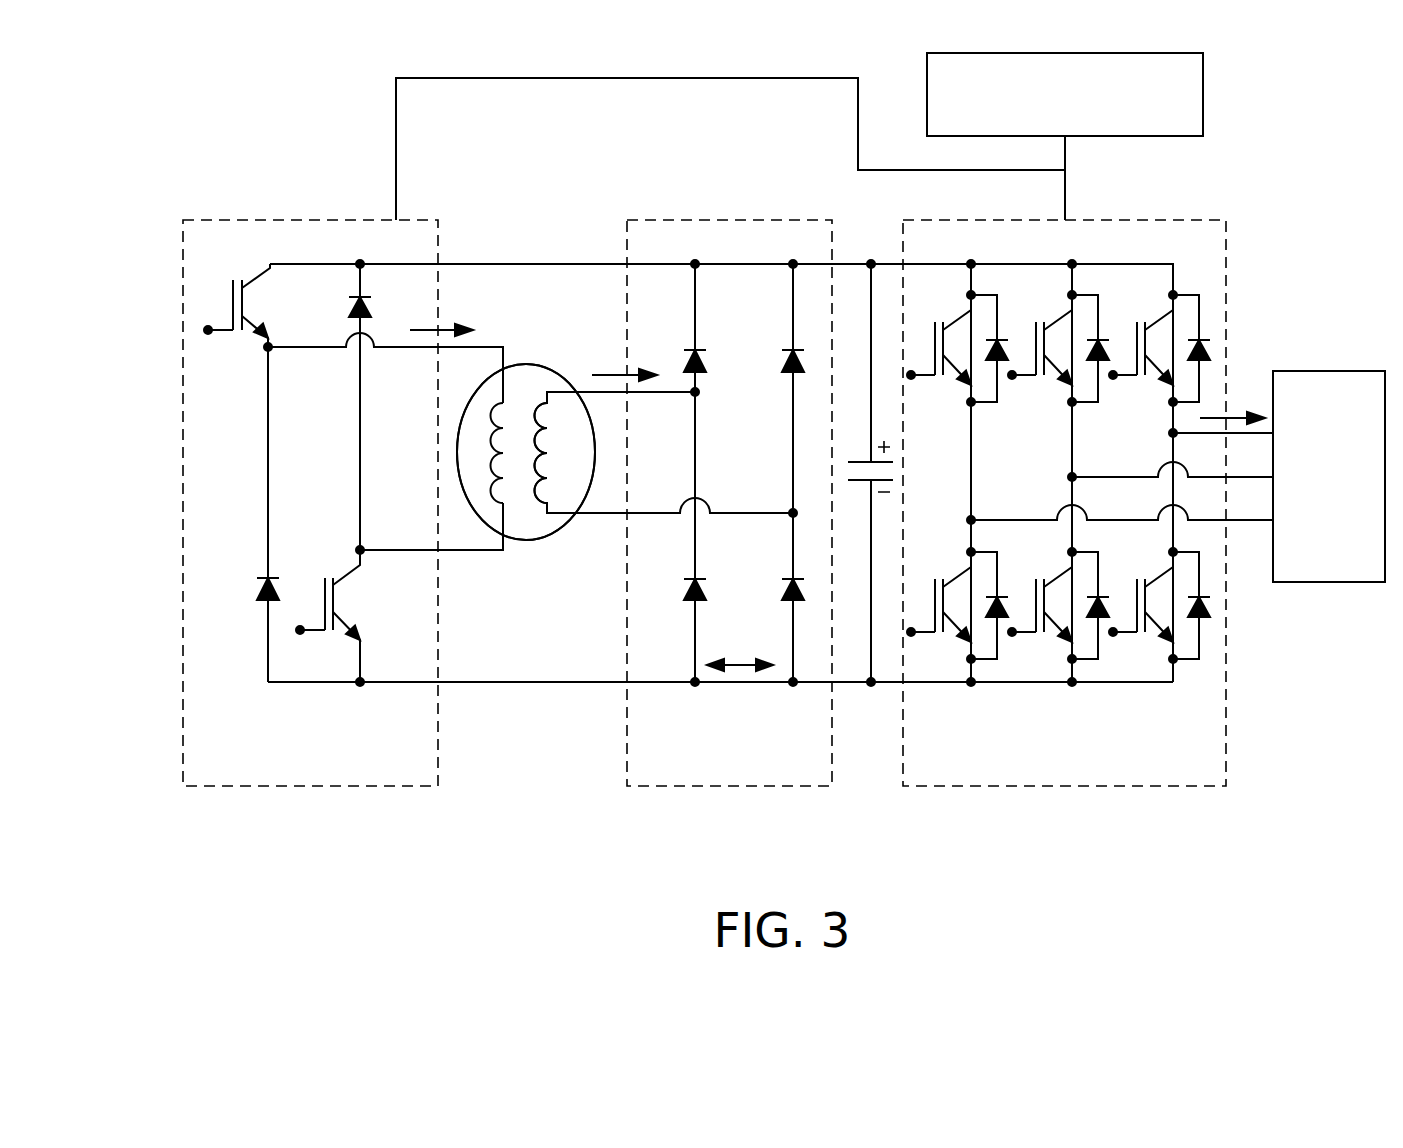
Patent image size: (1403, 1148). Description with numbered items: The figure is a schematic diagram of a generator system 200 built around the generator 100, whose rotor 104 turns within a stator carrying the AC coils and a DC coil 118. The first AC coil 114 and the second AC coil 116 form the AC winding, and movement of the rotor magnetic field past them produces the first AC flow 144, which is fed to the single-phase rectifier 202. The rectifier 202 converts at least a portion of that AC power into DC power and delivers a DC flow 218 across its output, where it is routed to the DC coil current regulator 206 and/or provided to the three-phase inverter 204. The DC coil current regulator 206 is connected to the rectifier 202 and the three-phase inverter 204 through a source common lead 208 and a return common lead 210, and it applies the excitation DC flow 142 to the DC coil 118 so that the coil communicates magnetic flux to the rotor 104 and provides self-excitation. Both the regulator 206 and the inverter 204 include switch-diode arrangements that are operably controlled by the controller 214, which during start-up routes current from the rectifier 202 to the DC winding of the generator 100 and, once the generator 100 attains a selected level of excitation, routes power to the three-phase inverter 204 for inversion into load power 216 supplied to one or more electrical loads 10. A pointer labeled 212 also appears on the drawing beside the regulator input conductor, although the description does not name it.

The electrical load 10 is at (1325, 582).
The generator 100 is at (534, 566).
The rotor 104 is at (492, 523).
The first AC coil 114 is at (548, 440).
The second AC coil 116 is at (610, 453).
The DC coil 118 is at (492, 440).
The excitation DC flow 142 is at (430, 330).
The first AC flow 144 is at (607, 372).
The generator system 200 is at (450, 812).
The rectifier 202 is at (710, 786).
The 3-phase inverter 204 is at (1075, 786).
The DC coil current regulator 206 is at (265, 786).
The source common lead 208 is at (672, 264).
The return common lead 210 is at (645, 684).
The regulator input conductor 212 is at (297, 238).
The controller 214 is at (1203, 95).
The load power 216 is at (1233, 418).
The DC flow 218 is at (738, 662).